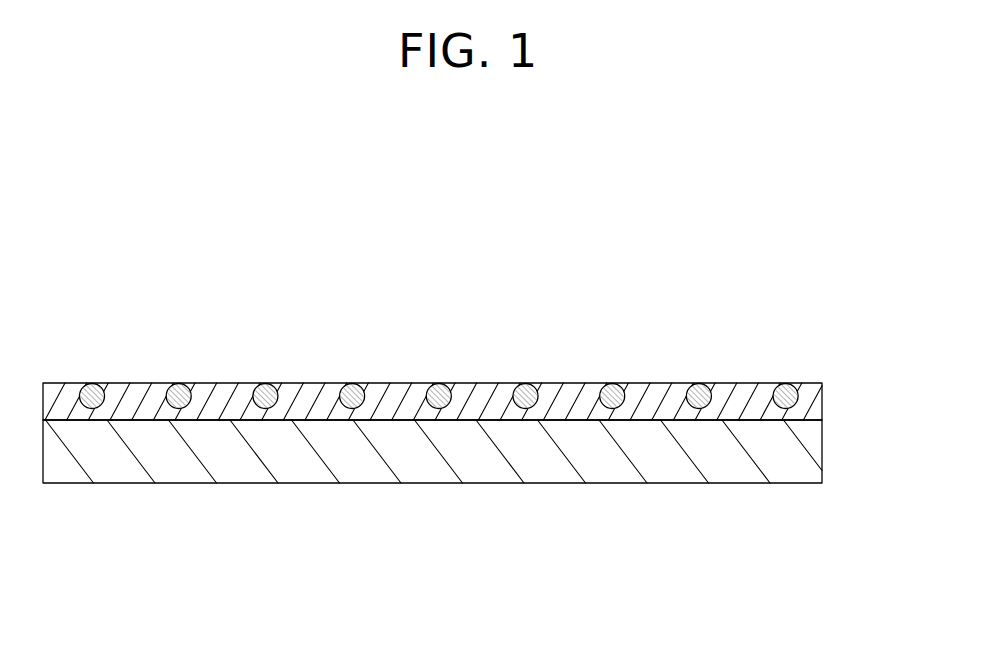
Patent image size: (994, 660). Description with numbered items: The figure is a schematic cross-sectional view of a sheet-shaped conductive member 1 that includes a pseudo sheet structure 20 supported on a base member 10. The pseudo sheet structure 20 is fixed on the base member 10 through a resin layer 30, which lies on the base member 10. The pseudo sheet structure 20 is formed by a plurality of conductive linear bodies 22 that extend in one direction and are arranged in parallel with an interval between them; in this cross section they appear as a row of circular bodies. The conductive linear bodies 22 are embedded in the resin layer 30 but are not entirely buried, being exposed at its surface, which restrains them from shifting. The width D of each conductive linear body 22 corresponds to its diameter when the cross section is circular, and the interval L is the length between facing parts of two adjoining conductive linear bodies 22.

The sheet-shaped conductive member 1 is at (663, 183).
The base member 10 is at (812, 447).
The resin layer 30 is at (812, 405).
The conductive linear bodies 22 is at (89, 403).
The pseudo sheet structure 20 is at (812, 550).
The width of conductive linear body D is at (105, 382).
The interval between conductive linear bodies L is at (339, 382).